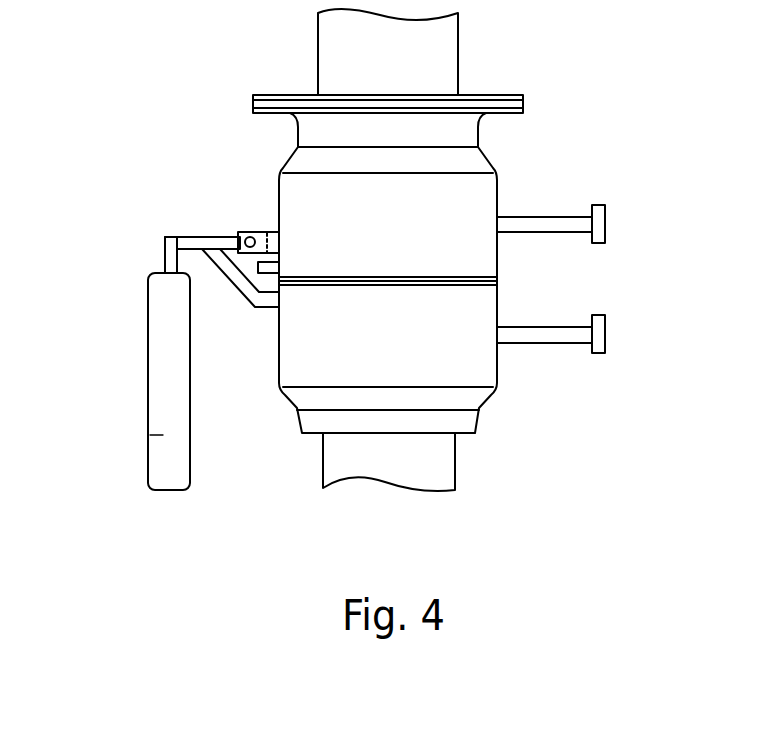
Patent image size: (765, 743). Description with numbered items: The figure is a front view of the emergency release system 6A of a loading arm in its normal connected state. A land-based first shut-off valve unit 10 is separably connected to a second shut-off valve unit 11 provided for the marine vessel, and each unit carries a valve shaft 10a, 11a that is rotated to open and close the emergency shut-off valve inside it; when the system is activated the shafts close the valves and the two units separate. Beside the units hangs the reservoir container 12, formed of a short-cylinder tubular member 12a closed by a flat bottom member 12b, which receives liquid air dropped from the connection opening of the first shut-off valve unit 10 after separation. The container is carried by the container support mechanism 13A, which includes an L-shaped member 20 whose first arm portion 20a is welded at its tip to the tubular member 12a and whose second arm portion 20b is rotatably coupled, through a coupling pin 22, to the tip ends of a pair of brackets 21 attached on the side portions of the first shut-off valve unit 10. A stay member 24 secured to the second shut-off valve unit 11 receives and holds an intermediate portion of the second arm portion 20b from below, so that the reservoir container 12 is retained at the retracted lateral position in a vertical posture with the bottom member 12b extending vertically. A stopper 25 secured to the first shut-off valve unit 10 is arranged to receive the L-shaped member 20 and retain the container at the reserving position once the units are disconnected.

The emergency release system 6A is at (471, 250).
The first shut-off valve unit 10 is at (500, 185).
The valve shaft 10a is at (605, 224).
The second shut-off valve unit 11 is at (501, 364).
The valve shaft 11a is at (605, 333).
The reservoir container 12 is at (110, 381).
The tubular member 12a is at (163, 435).
The bottom member 12b is at (148, 399).
The container support mechanism 13A is at (154, 304).
The L-shaped member 20 is at (159, 222).
The first arm portion 20a is at (163, 255).
The second arm portion 20b is at (192, 237).
The brackets 21 is at (268, 232).
The coupling pin 22 is at (250, 232).
The stay member 24 is at (238, 278).
The stopper 25 is at (273, 268).